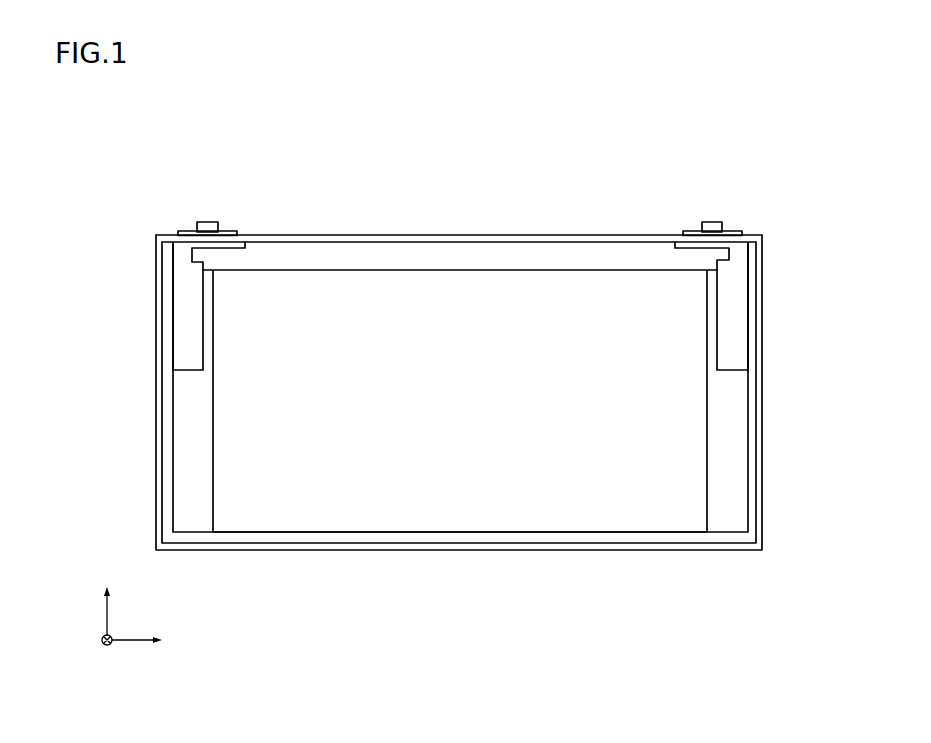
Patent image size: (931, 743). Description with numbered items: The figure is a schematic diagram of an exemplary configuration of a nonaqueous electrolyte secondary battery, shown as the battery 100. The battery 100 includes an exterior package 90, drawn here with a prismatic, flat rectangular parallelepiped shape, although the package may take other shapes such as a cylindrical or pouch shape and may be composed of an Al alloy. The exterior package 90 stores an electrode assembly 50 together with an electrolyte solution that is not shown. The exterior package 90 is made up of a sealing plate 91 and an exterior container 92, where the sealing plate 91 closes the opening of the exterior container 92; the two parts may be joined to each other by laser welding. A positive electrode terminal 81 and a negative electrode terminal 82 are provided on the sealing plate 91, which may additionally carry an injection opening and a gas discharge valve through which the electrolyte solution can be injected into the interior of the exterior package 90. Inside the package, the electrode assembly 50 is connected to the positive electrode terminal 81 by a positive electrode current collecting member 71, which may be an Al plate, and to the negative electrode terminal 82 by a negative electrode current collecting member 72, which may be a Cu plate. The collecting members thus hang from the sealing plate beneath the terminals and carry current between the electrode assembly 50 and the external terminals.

The battery 100 is at (158, 135).
The exterior package 90 is at (843, 154).
The sealing plate 91 is at (588, 236).
The exterior container 92 is at (764, 260).
The positive electrode terminal 81 is at (713, 221).
The negative electrode terminal 82 is at (206, 221).
The positive electrode current collecting member 71 is at (730, 322).
The negative electrode current collecting member 72 is at (181, 318).
The electrode assembly 50 is at (460, 490).